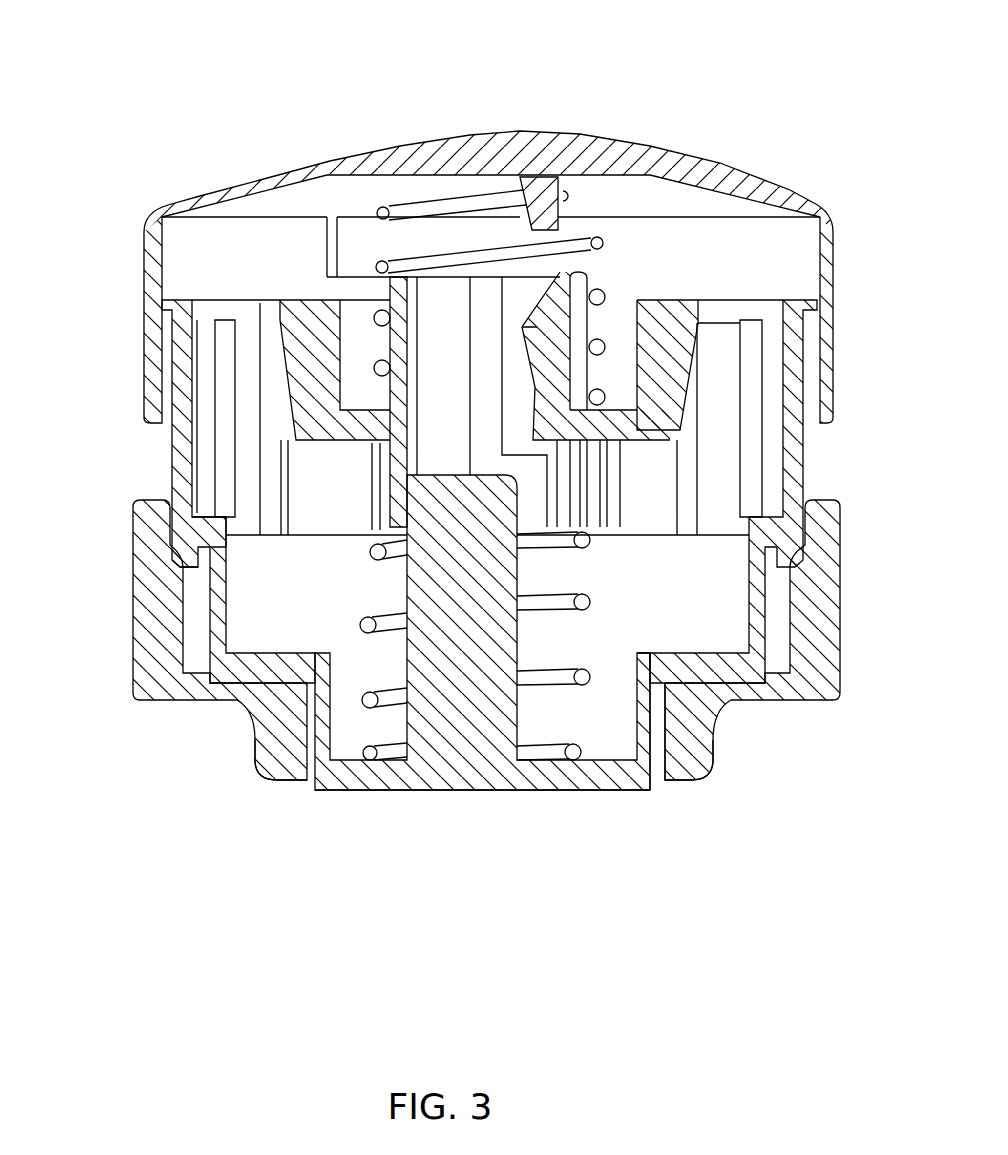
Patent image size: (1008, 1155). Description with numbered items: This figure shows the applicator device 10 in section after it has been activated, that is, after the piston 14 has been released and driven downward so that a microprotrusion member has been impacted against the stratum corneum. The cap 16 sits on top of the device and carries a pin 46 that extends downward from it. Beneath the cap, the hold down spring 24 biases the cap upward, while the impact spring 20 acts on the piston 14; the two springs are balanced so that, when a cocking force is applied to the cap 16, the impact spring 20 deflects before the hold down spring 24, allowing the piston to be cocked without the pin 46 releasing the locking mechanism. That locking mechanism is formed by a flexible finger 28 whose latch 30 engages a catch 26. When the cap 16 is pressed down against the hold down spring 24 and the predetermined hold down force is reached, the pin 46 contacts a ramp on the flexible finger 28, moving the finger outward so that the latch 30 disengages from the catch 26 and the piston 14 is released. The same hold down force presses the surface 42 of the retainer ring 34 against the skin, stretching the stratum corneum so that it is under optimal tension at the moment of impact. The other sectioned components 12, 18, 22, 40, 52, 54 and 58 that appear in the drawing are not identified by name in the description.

The applicator device 10 is at (733, 133).
The body 12 is at (173, 460).
The piston 14 is at (730, 663).
The cap 16 is at (783, 182).
The base plate 18 is at (613, 790).
The impact spring 20 is at (653, 790).
The lower spring 22 is at (513, 550).
The hold down spring 24 is at (383, 207).
The catch 26 is at (523, 520).
The flexible finger 28 is at (605, 348).
The latch 30 is at (528, 327).
The retainer ring 34 is at (133, 643).
The housing flange 40 is at (827, 517).
The surface 42 is at (277, 783).
The pin 46 is at (543, 200).
The lip 52 is at (213, 537).
The seal groove 54 is at (187, 587).
The sealing surface 58 is at (807, 313).